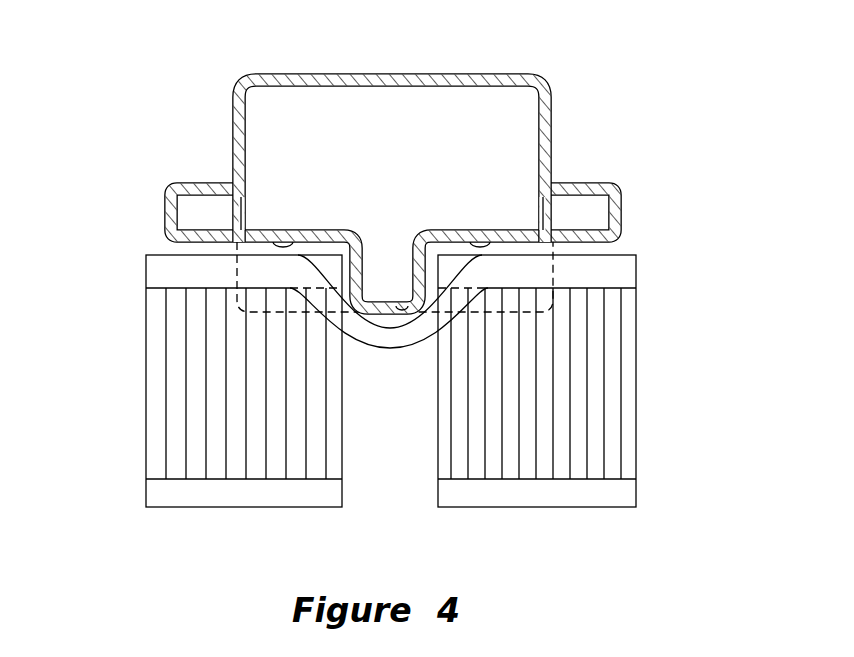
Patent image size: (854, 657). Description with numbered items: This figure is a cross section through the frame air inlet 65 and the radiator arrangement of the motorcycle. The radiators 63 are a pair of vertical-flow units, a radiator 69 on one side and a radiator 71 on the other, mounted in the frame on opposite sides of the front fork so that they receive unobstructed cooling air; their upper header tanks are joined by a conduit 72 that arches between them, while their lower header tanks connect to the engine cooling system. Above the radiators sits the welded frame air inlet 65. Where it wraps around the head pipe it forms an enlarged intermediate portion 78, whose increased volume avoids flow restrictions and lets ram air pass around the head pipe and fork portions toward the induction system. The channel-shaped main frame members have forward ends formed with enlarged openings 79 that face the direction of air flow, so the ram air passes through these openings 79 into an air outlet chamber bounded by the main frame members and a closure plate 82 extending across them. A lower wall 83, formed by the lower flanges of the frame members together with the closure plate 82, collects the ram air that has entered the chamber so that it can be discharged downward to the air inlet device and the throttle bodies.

The radiators 63 is at (398, 361).
The frame air inlet 65 is at (413, 207).
The radiator 69 is at (146, 346).
The radiator 71 is at (636, 345).
The conduit 72 is at (377, 348).
The enlarged intermediate portion 78 is at (191, 181).
The enlarged openings 79 is at (248, 210).
The closure plate 82 is at (498, 72).
The lower wall 83 is at (296, 240).